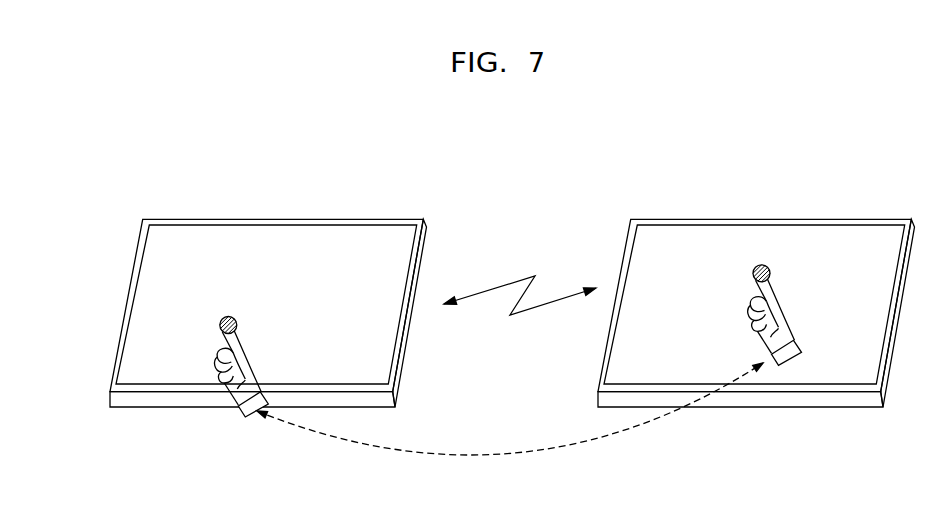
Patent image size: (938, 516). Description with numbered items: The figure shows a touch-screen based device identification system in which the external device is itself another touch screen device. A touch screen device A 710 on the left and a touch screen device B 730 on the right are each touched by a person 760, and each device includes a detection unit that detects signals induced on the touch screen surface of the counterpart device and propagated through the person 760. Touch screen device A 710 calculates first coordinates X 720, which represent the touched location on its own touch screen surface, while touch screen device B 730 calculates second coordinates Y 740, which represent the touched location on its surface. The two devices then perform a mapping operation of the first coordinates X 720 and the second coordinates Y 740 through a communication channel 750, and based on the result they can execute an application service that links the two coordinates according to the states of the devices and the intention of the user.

The touch screen device A 710 is at (268, 298).
The first coordinates X 720 is at (234, 355).
The touch screen device B 730 is at (756, 298).
The second coordinates Y 740 is at (767, 303).
The communication channel 750 is at (520, 282).
The person 760 is at (510, 424).